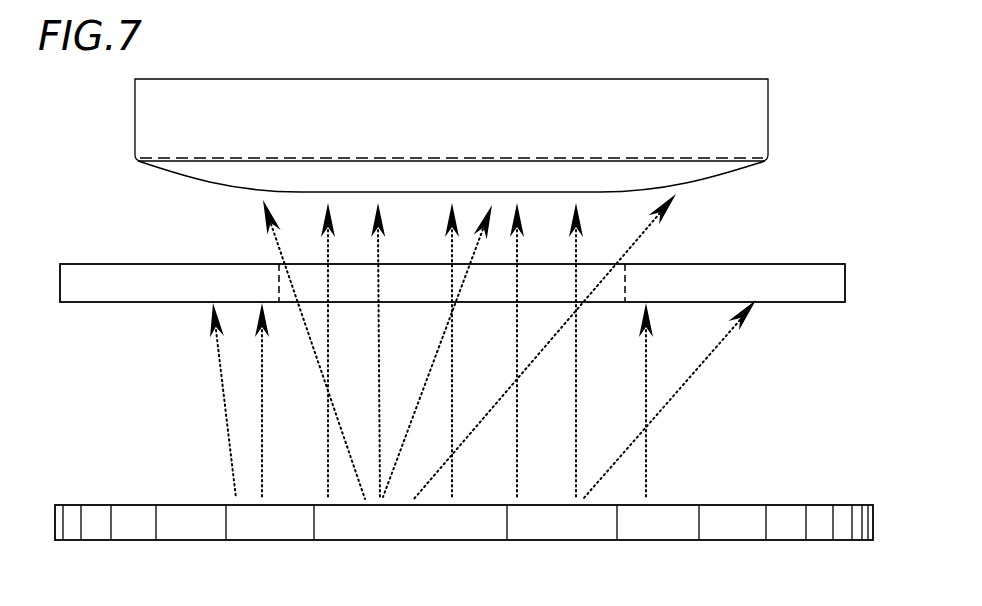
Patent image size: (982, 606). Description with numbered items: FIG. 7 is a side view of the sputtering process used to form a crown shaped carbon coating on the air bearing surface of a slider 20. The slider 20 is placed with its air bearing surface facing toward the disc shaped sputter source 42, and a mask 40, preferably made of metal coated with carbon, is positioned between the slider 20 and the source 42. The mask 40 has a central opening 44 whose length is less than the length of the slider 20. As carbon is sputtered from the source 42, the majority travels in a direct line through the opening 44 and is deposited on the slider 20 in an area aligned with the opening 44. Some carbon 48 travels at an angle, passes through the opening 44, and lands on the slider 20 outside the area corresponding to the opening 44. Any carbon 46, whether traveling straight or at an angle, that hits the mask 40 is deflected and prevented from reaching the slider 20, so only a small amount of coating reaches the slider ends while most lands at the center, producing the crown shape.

The slider 20 is at (690, 50).
The mask 40 is at (776, 264).
The sputter source 42 is at (735, 505).
The central opening 44 is at (279, 280).
The deflected sputtered carbon 46 is at (216, 387).
The angled sputtered carbon 48 is at (257, 206).